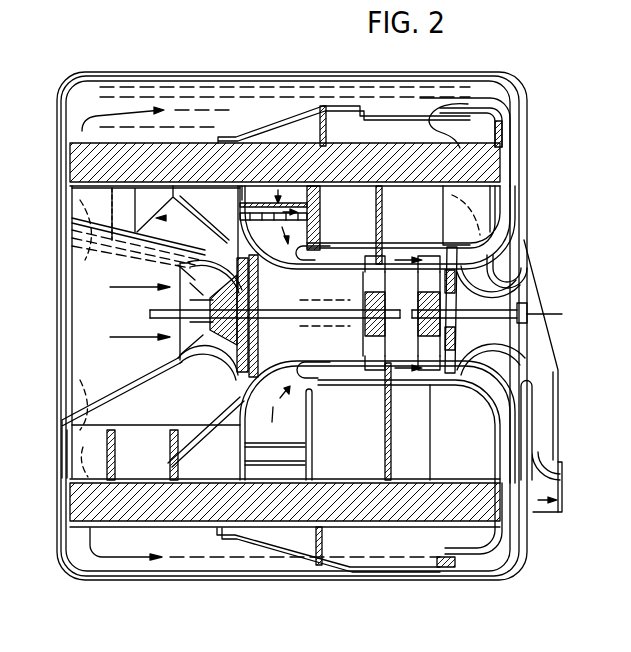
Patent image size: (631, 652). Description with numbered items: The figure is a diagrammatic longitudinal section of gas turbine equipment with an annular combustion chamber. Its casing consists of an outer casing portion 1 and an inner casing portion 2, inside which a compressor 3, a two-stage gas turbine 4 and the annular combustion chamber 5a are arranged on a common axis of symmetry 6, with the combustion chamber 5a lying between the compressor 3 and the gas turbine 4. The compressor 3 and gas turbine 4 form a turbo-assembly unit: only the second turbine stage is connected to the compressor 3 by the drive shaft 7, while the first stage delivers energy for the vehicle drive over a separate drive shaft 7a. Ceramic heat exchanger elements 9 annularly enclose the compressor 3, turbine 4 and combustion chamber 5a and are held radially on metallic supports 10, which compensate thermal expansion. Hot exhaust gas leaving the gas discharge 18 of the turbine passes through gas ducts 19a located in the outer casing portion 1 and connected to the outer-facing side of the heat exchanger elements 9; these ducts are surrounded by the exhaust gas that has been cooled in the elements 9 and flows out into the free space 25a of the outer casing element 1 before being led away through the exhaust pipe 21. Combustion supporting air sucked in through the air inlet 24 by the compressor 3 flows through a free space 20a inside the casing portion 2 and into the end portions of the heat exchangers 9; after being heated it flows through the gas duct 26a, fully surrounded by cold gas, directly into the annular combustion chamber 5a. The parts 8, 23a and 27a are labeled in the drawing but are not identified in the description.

The outer casing portion 1 is at (265, 73).
The inner casing portion 2 is at (276, 358).
The compressor 3 is at (205, 235).
The gas turbine 4 is at (441, 246).
The annular combustion chamber 5a is at (336, 286).
The common axis of symmetry 6 is at (547, 318).
The drive shaft 7 is at (327, 312).
The separate drive shaft 7a is at (518, 312).
The partition plate 8 is at (432, 218).
The ceramic heat exchanger elements 9 is at (485, 142).
The metallic supports 10 is at (175, 240).
The gas discharge 18 is at (466, 370).
The gas ducts 19a is at (508, 170).
The free space 20a is at (72, 425).
The exhaust pipe 21 is at (558, 485).
The diagonal vane 23a is at (240, 458).
The air inlet 24 is at (180, 272).
The free space 25a is at (165, 75).
The gas duct 26a is at (290, 418).
The lower flow duct 27a is at (452, 512).